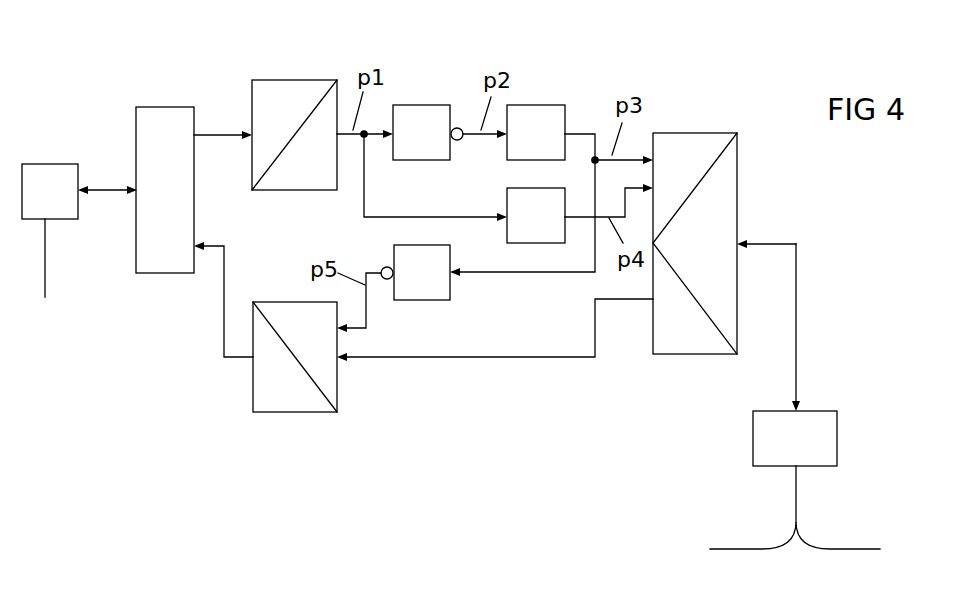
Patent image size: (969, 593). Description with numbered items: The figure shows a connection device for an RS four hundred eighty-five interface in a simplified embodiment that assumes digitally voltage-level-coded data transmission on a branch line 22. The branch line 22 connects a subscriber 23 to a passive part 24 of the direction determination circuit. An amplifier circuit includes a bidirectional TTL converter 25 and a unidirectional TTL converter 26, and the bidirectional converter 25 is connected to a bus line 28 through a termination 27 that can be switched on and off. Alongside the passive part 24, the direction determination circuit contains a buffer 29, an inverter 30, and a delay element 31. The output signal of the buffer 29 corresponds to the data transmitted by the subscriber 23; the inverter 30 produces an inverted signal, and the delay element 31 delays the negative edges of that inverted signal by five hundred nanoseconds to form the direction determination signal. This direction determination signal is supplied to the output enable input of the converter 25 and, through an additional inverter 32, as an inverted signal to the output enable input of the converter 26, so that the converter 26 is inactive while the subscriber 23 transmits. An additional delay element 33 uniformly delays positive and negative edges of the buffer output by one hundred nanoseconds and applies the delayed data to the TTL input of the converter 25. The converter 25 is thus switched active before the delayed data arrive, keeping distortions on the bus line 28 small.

The branch line 22 is at (108, 198).
The subscriber 23 is at (65, 175).
The passive part 24 is at (180, 122).
The bidirectional TTL/RS 485 converter 25 is at (695, 145).
The unidirectional TTL/RS 485 converter 26 is at (323, 400).
The termination 27 is at (767, 425).
The bus line 28 is at (733, 548).
The RS 485/TTL converter 29 is at (310, 90).
The inverter 30 is at (436, 118).
The delay element 31 is at (551, 117).
The inverter 32 is at (406, 258).
The delay element 33 is at (521, 203).